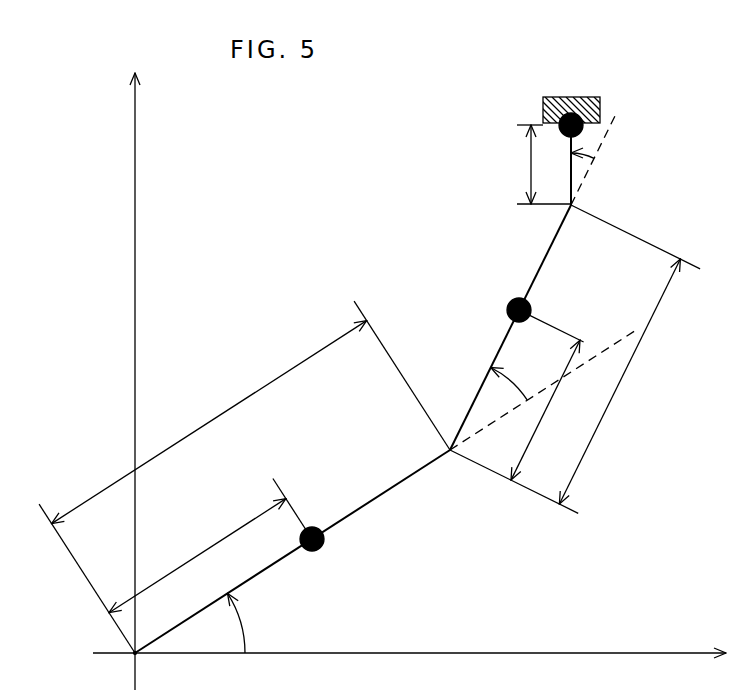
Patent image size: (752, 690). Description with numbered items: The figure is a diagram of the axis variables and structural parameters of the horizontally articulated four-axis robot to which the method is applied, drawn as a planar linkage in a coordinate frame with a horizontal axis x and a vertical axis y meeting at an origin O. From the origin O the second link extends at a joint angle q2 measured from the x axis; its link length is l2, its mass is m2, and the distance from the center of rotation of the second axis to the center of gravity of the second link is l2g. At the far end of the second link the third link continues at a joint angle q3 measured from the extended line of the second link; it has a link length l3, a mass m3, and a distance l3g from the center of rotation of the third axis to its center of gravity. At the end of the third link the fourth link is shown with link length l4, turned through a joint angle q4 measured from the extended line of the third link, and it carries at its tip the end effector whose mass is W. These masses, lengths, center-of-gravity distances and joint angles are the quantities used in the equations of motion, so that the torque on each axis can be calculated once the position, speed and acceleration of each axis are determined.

The mass of the end effector W is at (569, 102).
The mass of the second link m2 is at (322, 552).
The mass of the third link m3 is at (506, 299).
The link length of the second link l2 is at (244, 477).
The distance to the center of gravity of the second link l2g is at (210, 546).
The link length of the third link l3 is at (575, 359).
The distance to the center of gravity of the third link l3g is at (547, 395).
The link length of the fourth link l4 is at (536, 164).
The axis variable of the second axis q2 is at (252, 623).
The axis variable of the third axis q3 is at (544, 389).
The axis variable of the fourth axis q4 is at (595, 158).
The x coordinate axis x is at (409, 671).
The y coordinate axis y is at (121, 381).
The origin of coordinate system O is at (147, 668).